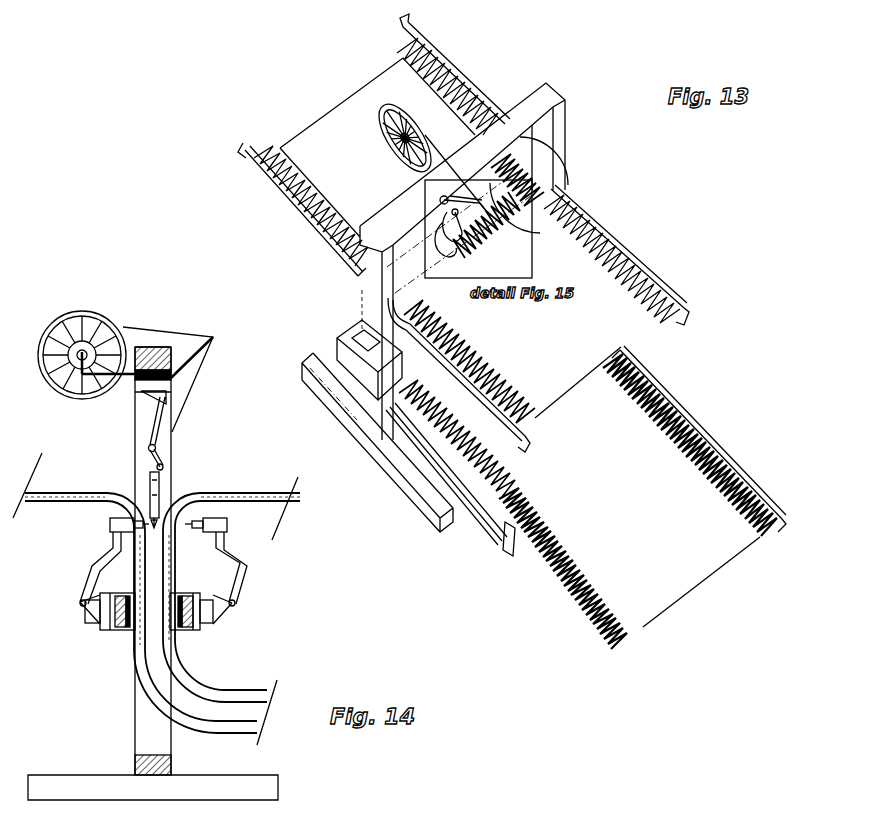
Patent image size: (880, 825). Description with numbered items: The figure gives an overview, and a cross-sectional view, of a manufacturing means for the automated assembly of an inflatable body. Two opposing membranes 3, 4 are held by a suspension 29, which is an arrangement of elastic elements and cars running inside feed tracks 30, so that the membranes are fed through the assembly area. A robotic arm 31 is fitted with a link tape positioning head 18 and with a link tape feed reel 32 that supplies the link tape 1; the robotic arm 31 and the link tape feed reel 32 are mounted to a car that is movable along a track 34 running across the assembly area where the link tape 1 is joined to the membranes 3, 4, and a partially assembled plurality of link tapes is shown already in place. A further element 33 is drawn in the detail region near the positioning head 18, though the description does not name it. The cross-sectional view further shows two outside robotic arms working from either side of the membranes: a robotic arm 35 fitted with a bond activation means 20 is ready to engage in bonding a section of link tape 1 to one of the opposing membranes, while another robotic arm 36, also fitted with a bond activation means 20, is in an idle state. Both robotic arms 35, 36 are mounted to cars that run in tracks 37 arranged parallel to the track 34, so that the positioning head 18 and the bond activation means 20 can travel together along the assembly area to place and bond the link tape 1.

In FIG. 13, the link tape 1 is at (505, 112).
In FIG. 14, the link tape 1 is at (163, 330).
In FIG. 13, the membrane 3 is at (396, 82).
In FIG. 13, the membrane 4 is at (617, 322).
In FIG. 13, the link tape positioning head 18 is at (437, 278).
In FIG. 14, the link tape positioning head 18 is at (180, 487).
In FIG. 14, the bond activation means 20 is at (110, 525).
In FIG. 13, the suspension 29 is at (462, 85).
In FIG. 13, the feed tracks 30 is at (318, 233).
In FIG. 14, the feed tracks 30 is at (97, 487).
In FIG. 13, the robotic arm 31 is at (594, 232).
In FIG. 14, the robotic arm 31 is at (150, 432).
In FIG. 13, the link tape feed reel 32 is at (378, 104).
In FIG. 14, the link tape feed reel 32 is at (82, 340).
In FIG. 13, the guide spring 33 is at (532, 193).
In FIG. 13, the track 34 is at (550, 145).
In FIG. 14, the track 34 is at (183, 380).
In FIG. 14, the robotic arm 35 is at (80, 580).
In FIG. 14, the robotic arm 36 is at (240, 590).
In FIG. 14, the tracks 37 is at (193, 637).